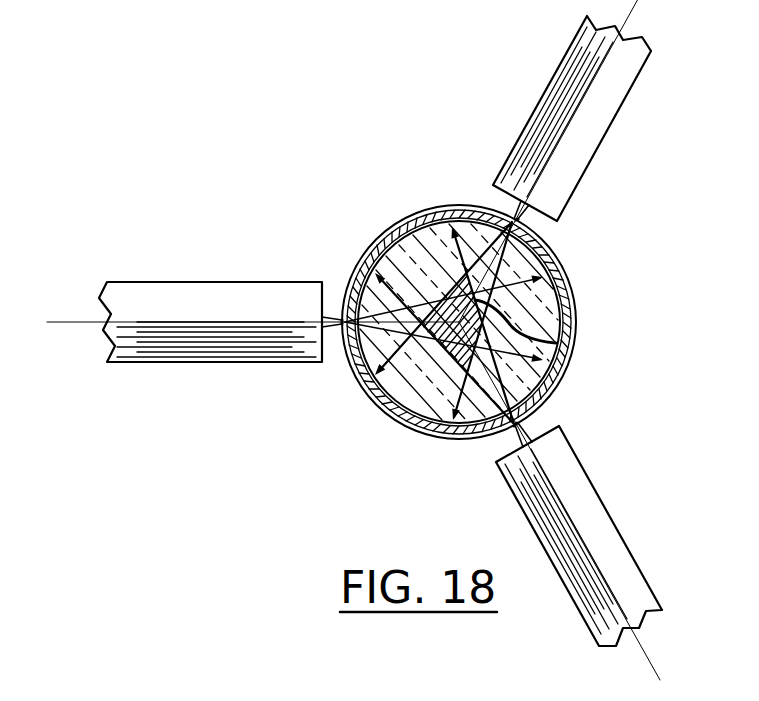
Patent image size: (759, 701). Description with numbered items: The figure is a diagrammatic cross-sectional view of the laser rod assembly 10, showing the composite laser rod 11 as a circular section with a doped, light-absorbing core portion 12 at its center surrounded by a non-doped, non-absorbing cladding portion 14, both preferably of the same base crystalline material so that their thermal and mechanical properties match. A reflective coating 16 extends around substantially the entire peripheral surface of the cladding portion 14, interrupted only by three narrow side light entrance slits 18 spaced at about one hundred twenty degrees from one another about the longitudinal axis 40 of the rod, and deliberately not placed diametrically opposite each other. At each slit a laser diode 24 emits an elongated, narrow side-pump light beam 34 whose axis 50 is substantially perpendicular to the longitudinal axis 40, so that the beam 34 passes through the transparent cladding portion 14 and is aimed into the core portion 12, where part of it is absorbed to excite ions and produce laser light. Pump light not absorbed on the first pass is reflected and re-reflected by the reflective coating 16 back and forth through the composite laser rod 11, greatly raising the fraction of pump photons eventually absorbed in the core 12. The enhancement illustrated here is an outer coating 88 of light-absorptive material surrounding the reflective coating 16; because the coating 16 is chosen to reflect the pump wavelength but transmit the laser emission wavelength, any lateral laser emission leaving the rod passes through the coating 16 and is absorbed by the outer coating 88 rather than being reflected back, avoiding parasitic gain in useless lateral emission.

The laser rod assembly 10 is at (366, 199).
The composite laser rod 11 is at (378, 240).
The core portion 12 is at (556, 343).
The cladding portion 14 is at (557, 309).
The reflective coating 16 is at (556, 273).
The side light entrance slit 18 is at (342, 333).
The laser diode 24 is at (196, 283).
The side-pump light beam 34 is at (338, 318).
The longitudinal axis 40 is at (412, 412).
The axis 50 is at (80, 322).
The outer coating 88 is at (376, 401).